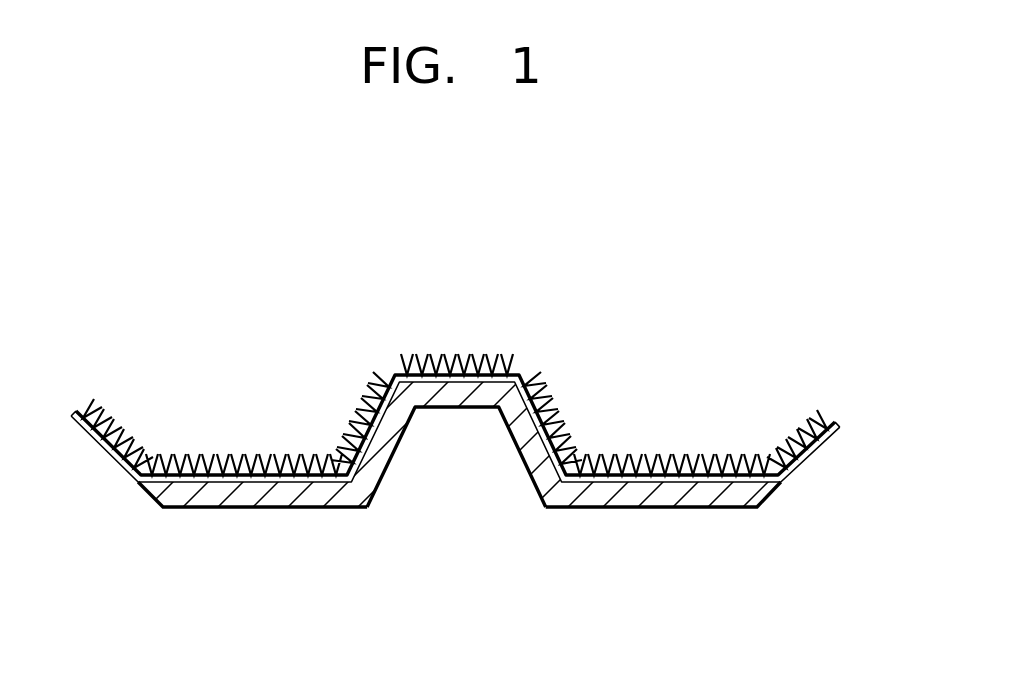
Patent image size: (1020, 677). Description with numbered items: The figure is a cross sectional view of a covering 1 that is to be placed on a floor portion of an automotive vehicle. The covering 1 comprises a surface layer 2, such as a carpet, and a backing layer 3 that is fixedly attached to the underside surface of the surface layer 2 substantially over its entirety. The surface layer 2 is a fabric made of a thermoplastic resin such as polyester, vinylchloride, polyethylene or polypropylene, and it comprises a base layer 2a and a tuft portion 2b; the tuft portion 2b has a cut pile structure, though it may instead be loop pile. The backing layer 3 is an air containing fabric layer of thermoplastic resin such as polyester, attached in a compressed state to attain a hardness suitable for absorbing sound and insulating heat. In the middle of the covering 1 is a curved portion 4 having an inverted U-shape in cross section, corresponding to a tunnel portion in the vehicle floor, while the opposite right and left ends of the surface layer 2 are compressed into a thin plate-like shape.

The covering 1 is at (781, 405).
The surface layer 2 is at (898, 358).
The base layer 2a is at (835, 423).
The tuft portion 2b is at (815, 409).
The backing layer 3 is at (657, 490).
The curved portion 4 is at (455, 400).